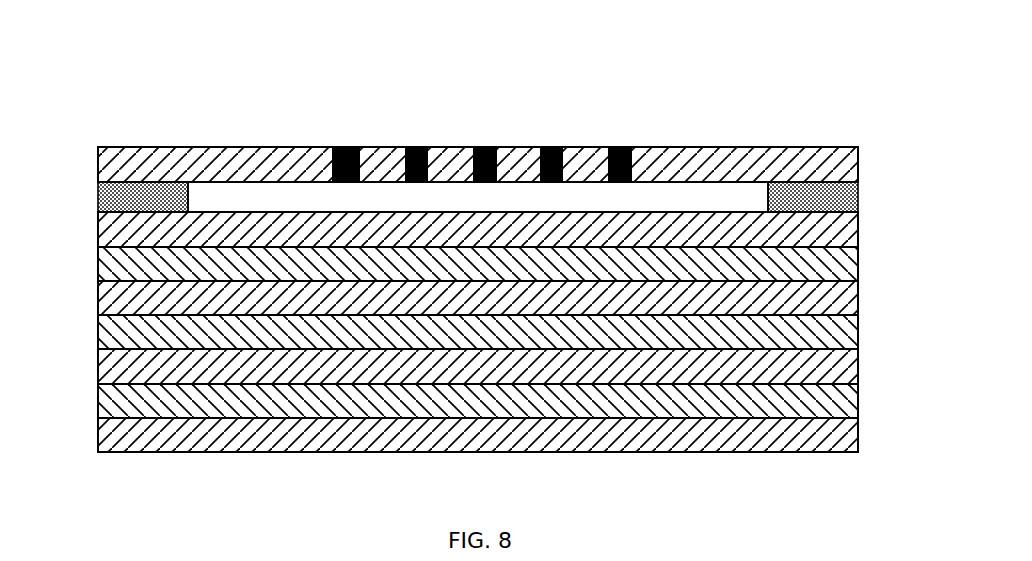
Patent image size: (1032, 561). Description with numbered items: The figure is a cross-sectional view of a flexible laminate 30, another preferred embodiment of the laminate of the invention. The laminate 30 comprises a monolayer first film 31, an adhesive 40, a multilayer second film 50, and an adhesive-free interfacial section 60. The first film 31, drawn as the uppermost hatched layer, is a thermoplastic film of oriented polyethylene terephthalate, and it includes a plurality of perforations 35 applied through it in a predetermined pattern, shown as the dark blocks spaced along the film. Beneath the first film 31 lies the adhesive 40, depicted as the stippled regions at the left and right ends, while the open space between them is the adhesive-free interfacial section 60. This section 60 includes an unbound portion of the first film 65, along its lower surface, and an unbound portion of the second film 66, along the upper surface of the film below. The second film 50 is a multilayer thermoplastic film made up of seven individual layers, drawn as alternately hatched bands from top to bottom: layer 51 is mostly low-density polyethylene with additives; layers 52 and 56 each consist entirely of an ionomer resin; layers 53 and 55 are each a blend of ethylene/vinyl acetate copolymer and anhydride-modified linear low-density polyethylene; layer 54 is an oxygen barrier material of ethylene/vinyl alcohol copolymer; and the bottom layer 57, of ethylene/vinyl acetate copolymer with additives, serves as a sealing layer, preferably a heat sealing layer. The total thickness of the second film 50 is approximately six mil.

The flexible laminate 30 is at (434, 78).
The first film 31 is at (860, 167).
The perforations 35 is at (605, 147).
The adhesive 40 is at (449, 147).
The second film 50 is at (477, 371).
The layer 51 is at (860, 229).
The layer 52 is at (98, 268).
The layer 53 is at (860, 300).
The layer 54 is at (98, 332).
The layer 55 is at (860, 367).
The layer 56 is at (98, 400).
The layer 57 is at (860, 433).
The adhesive-free interfacial section 60 is at (208, 197).
The unbound portion of the first film 65 is at (277, 180).
The unbound portion of the second film 66 is at (697, 213).